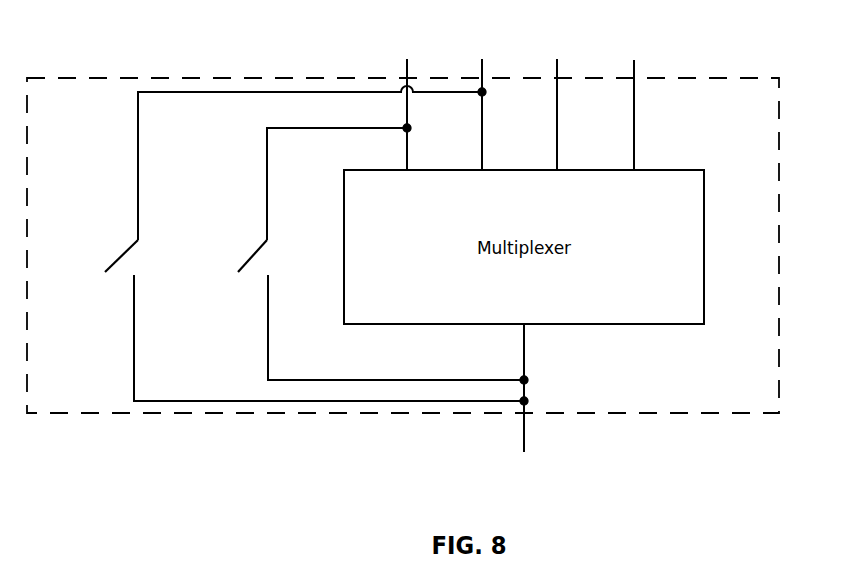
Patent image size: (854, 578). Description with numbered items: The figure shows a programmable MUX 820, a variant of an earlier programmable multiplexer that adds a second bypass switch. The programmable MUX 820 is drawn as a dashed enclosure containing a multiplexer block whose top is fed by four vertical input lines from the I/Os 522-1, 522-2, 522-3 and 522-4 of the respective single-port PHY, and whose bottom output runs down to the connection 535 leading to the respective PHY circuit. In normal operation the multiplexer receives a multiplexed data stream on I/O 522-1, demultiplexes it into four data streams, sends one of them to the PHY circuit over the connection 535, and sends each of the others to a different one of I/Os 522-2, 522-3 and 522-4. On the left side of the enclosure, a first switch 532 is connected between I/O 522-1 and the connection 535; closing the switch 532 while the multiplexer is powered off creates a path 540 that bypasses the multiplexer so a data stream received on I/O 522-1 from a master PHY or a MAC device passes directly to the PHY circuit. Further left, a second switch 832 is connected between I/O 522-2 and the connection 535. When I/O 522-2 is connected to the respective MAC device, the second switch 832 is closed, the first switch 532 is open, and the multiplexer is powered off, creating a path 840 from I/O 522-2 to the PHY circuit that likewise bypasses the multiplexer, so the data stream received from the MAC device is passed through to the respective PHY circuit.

The programmable MUX 820 is at (737, 75).
The I/O 522-1 is at (407, 59).
The I/O 522-2 is at (482, 59).
The I/O 522-3 is at (557, 59).
The I/O 522-4 is at (634, 60).
The path 840 is at (137, 144).
The path 540 is at (266, 168).
The second switch 832 is at (108, 242).
The switch 532 is at (247, 250).
The connection 535 is at (530, 440).